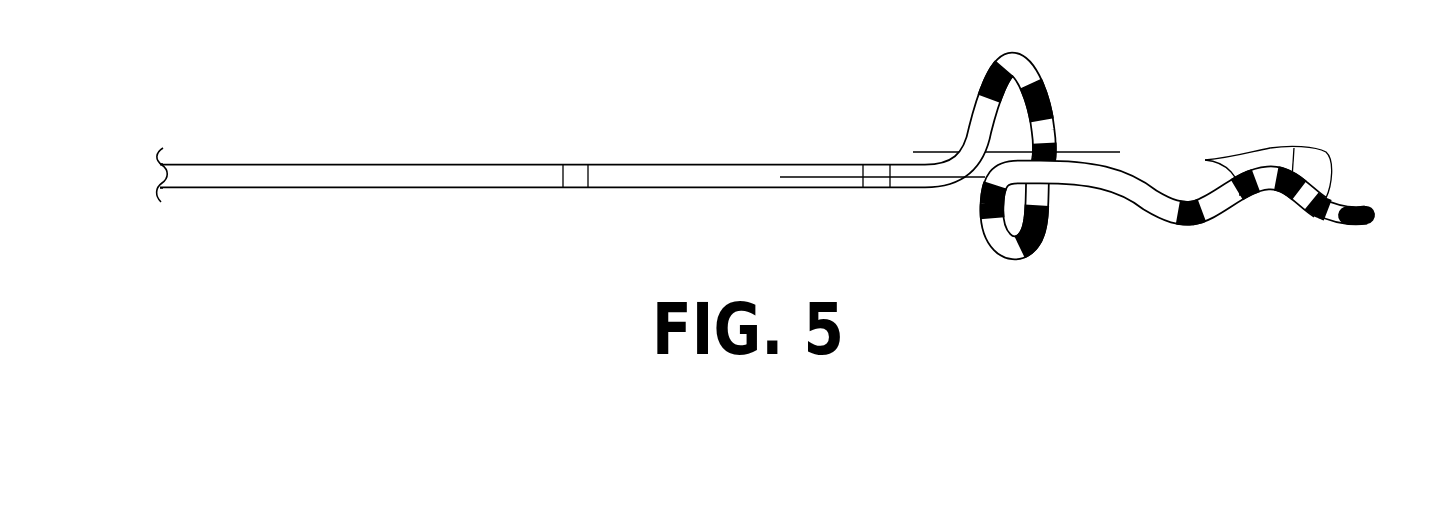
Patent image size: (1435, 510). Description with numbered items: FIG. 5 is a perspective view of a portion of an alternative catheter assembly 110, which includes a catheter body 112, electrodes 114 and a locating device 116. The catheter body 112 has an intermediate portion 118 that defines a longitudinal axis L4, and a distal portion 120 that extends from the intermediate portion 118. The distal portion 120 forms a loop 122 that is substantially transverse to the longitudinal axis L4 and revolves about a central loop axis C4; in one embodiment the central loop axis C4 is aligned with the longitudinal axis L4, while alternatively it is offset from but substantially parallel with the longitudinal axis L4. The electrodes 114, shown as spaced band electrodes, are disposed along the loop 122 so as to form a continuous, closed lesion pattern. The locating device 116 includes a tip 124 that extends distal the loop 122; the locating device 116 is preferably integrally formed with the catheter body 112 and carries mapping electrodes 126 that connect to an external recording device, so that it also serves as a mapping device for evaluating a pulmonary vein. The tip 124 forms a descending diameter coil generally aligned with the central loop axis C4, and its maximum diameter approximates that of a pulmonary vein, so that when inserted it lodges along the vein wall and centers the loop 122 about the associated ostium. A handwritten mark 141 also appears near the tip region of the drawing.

The catheter assembly 110 is at (462, 86).
The catheter body 112 is at (340, 194).
The electrodes 114 is at (1049, 88).
The locating device 116 is at (1155, 215).
The intermediate portion 118 is at (715, 193).
The distal portion 120 is at (992, 253).
The loop 122 is at (981, 85).
The tip 124 is at (1268, 192).
The mapping electrodes 126 is at (1193, 202).
The longitudinal axis L4 is at (839, 173).
The central loop axis C4 is at (1079, 151).
The distal tip 141 is at (1386, 133).